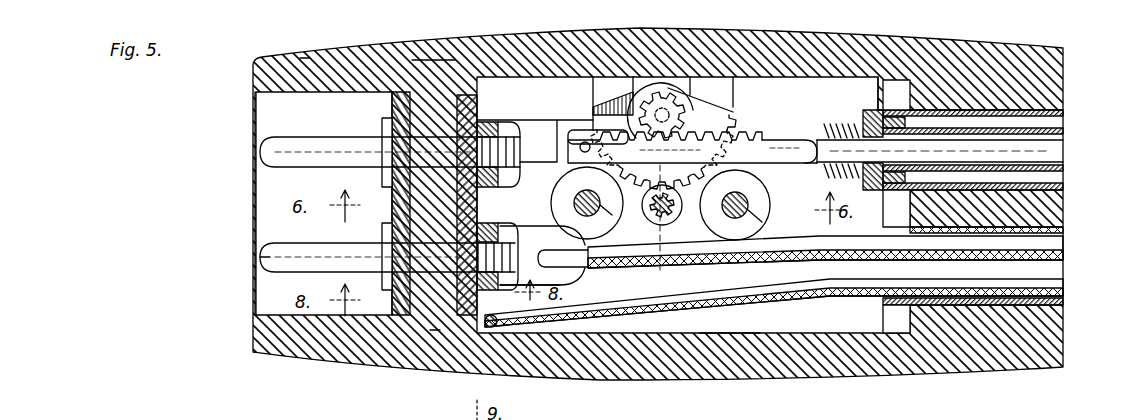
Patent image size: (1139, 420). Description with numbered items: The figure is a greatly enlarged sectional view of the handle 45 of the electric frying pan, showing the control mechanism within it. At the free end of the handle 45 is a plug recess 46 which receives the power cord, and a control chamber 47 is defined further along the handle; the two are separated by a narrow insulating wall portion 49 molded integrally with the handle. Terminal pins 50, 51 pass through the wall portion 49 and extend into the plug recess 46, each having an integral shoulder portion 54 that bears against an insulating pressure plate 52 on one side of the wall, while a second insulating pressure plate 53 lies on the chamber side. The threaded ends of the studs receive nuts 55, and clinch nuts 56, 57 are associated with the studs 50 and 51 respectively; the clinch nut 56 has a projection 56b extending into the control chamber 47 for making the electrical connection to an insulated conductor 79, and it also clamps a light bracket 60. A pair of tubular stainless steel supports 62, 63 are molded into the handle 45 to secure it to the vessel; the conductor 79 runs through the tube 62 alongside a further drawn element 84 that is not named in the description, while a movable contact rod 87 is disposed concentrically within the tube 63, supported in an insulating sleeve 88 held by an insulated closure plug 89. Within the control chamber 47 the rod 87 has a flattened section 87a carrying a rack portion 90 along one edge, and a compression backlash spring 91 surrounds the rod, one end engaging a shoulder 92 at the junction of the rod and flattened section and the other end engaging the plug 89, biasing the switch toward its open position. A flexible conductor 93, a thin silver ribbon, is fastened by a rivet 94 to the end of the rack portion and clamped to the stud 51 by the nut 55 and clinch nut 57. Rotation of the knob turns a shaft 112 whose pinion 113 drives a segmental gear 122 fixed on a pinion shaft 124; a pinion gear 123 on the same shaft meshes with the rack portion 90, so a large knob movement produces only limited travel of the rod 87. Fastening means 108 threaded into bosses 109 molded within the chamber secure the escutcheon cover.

The handle 45 is at (903, 40).
The plug recess 46 is at (310, 95).
The control chamber 47 is at (730, 321).
The insulating wall portion 49 is at (440, 290).
The terminal pin 50 is at (262, 262).
The terminal pin 51 is at (300, 150).
The insulating pressure plate 52 is at (392, 108).
The insulating pressure plate 53 is at (442, 97).
The shoulder portion 54 is at (383, 255).
The nut 55 is at (513, 230).
The clinch nut 56 is at (528, 270).
The projection 56b is at (588, 268).
The clinch nut 57 is at (490, 123).
The light bracket 60 is at (490, 224).
The support 62 is at (1052, 244).
The support 63 is at (1045, 110).
The conductor 79 is at (843, 252).
The lower rack rail 84 is at (780, 296).
The contact rod 87 is at (1050, 150).
The flattened section 87a is at (800, 163).
The insulating sleeve 88 is at (1050, 128).
The insulated closure plug 89 is at (877, 108).
The rack portion 90 is at (792, 126).
The backlash spring 91 is at (845, 128).
The shoulder 92 is at (820, 130).
The flexible conductor 93 is at (477, 128).
The rivet 94 is at (585, 142).
The fastening means 108 is at (600, 215).
The boss 109 is at (600, 192).
The shaft 112 is at (660, 262).
The pinion 113 is at (666, 225).
The segmental gear 122 is at (737, 116).
The pinion gear 123 is at (672, 106).
The pinion shaft 124 is at (660, 92).